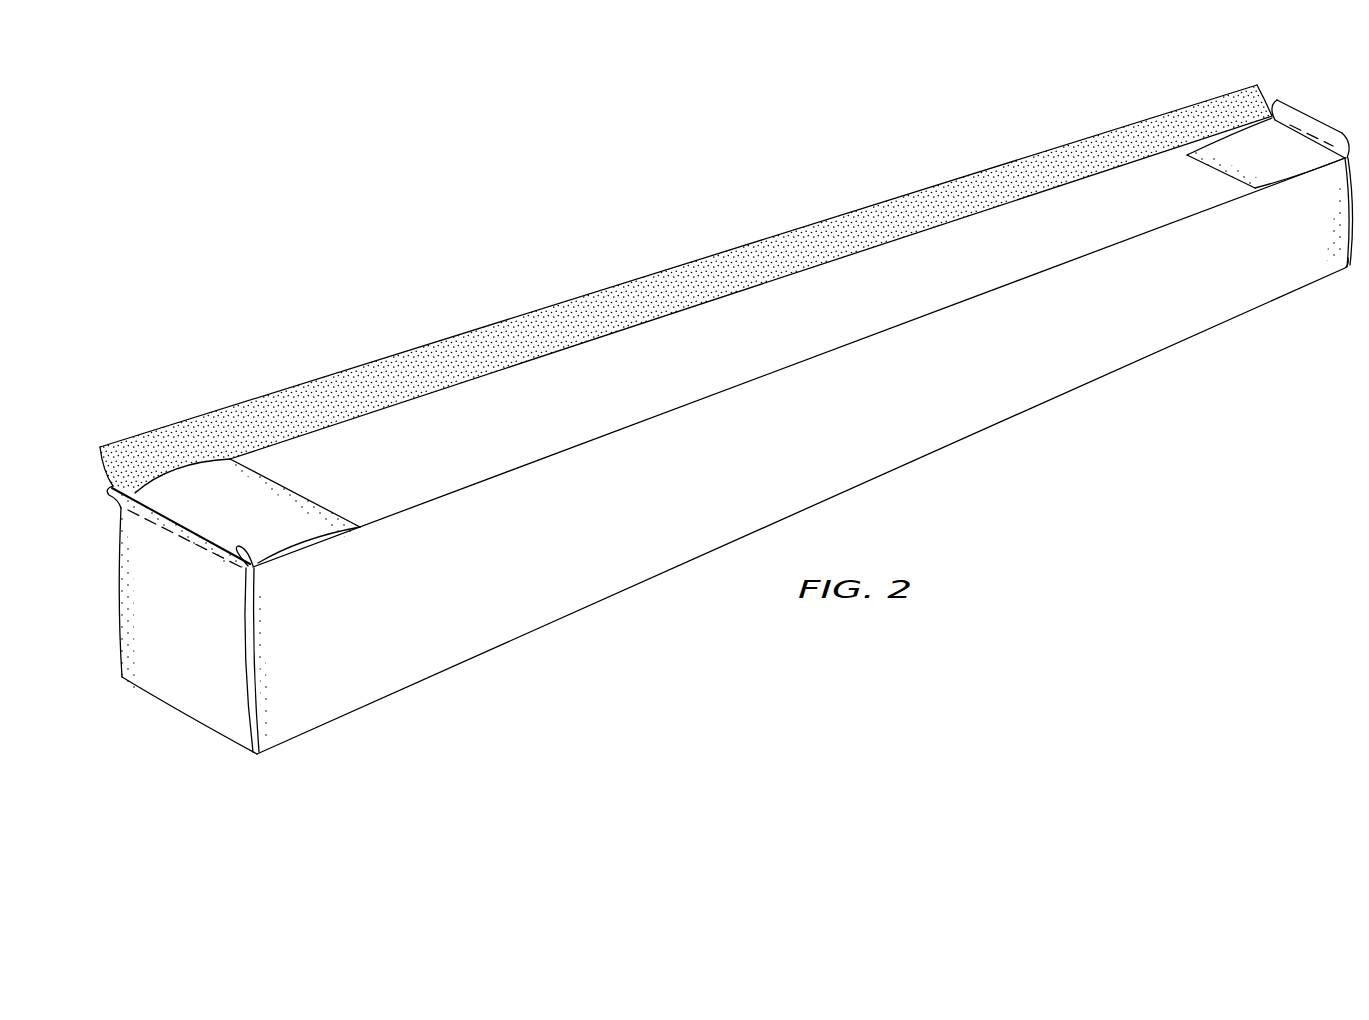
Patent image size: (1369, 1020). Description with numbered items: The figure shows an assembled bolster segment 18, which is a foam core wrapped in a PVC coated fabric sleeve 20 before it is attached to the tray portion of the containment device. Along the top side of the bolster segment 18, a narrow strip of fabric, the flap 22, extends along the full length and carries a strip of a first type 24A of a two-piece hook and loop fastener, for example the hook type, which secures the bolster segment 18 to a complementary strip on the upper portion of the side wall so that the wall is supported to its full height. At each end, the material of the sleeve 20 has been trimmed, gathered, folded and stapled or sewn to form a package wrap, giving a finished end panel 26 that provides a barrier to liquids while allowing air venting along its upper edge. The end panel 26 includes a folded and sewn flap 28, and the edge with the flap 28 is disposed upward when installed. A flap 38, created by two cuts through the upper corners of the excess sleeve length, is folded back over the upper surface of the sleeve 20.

The bolster segment 18 is at (386, 246).
The sleeve 20 is at (1055, 387).
The flap 22 is at (937, 187).
The first type hook and loop fastener strip 24A is at (613, 303).
The finished end 26 is at (173, 703).
The folded and sewn flap 28 is at (180, 529).
The flap 38 is at (306, 505).